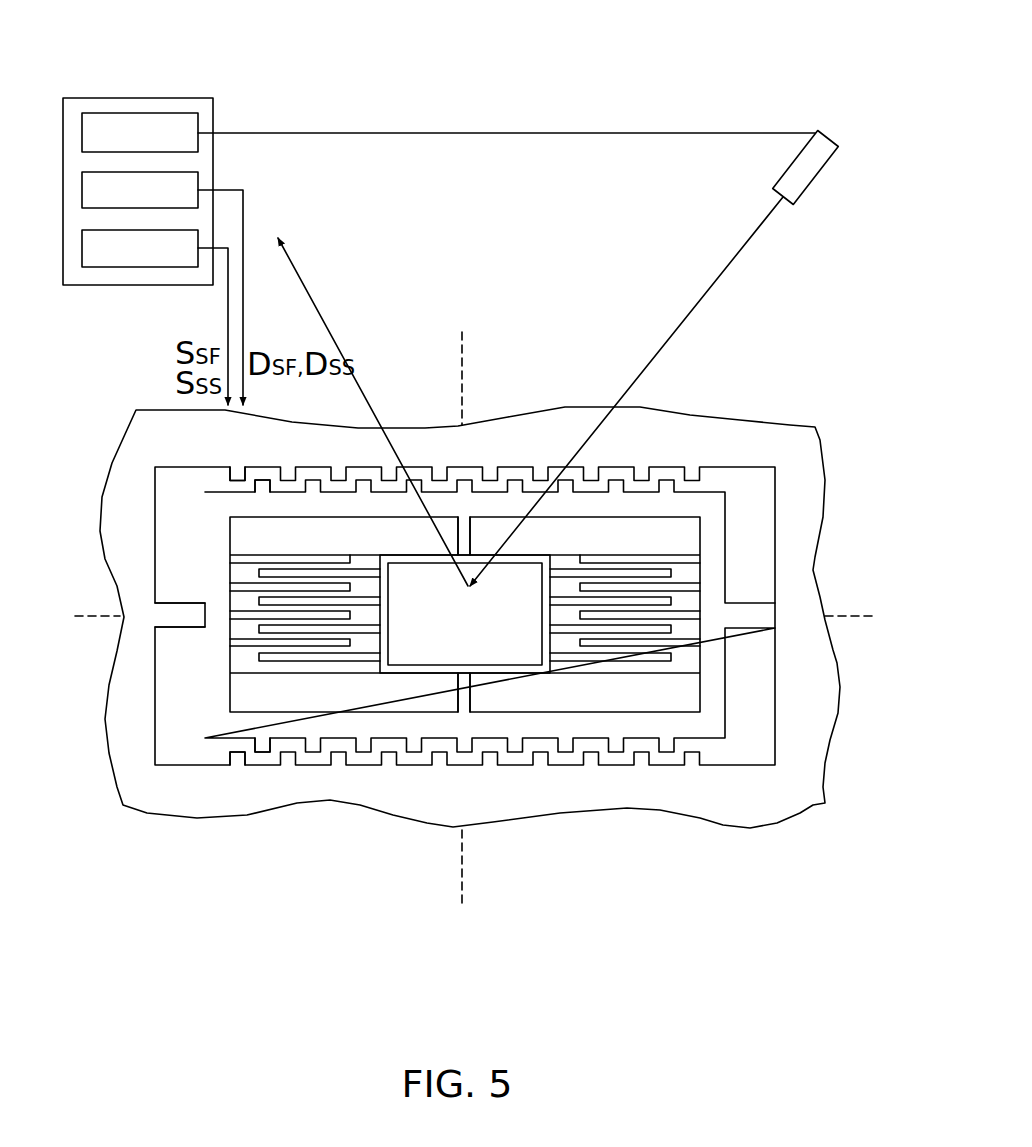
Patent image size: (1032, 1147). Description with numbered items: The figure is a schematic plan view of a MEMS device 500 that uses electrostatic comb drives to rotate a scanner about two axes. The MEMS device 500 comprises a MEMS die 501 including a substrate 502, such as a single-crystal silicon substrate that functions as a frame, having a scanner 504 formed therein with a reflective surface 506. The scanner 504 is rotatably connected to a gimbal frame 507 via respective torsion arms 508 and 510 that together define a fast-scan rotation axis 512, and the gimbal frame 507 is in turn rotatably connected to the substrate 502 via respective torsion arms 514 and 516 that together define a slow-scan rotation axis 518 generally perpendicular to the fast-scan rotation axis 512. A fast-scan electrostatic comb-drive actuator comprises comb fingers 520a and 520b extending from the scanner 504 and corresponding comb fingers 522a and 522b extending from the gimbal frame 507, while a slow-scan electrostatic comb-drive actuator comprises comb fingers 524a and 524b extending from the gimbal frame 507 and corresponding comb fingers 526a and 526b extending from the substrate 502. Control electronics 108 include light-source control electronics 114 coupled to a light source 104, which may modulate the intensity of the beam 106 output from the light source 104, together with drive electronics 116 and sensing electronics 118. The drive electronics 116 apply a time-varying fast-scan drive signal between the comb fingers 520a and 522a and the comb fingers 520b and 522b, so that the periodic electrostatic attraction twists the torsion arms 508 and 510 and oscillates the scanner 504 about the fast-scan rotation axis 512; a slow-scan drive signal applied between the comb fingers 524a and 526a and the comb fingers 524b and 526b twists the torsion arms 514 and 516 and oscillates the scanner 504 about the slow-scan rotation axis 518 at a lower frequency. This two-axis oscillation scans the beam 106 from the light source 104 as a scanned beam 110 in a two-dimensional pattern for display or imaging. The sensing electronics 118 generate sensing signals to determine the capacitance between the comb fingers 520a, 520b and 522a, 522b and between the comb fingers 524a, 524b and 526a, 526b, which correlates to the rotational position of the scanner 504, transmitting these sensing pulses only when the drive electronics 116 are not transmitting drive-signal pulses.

The MEMS device 500 is at (817, 81).
The MEMS die 501 is at (674, 408).
The substrate 502 is at (802, 452).
The scanner 504 is at (465, 614).
The reflective surface 506 is at (465, 614).
The gimbal frame 507 is at (715, 502).
The torsion arm 508 is at (464, 537).
The torsion arm 510 is at (465, 703).
The fast-scan rotation axis 512 is at (461, 620).
The torsion arm 514 is at (752, 615).
The torsion arm 516 is at (170, 613).
The slow-scan rotation axis 518 is at (472, 616).
The comb fingers 520a is at (272, 657).
The comb fingers 520b is at (660, 658).
The comb fingers 522a is at (250, 643).
The comb fingers 522b is at (602, 645).
The comb fingers 524a is at (260, 743).
The comb fingers 524b is at (263, 485).
The comb fingers 526a is at (238, 760).
The comb fingers 526b is at (238, 467).
The light source 104 is at (808, 168).
The beam 106 is at (752, 243).
The control electronics 108 is at (125, 98).
The scanned beam 110 is at (310, 298).
The light-source control electronics 114 is at (448, 132).
The drive electronics 116 is at (162, 288).
The sensing electronics 118 is at (155, 317).